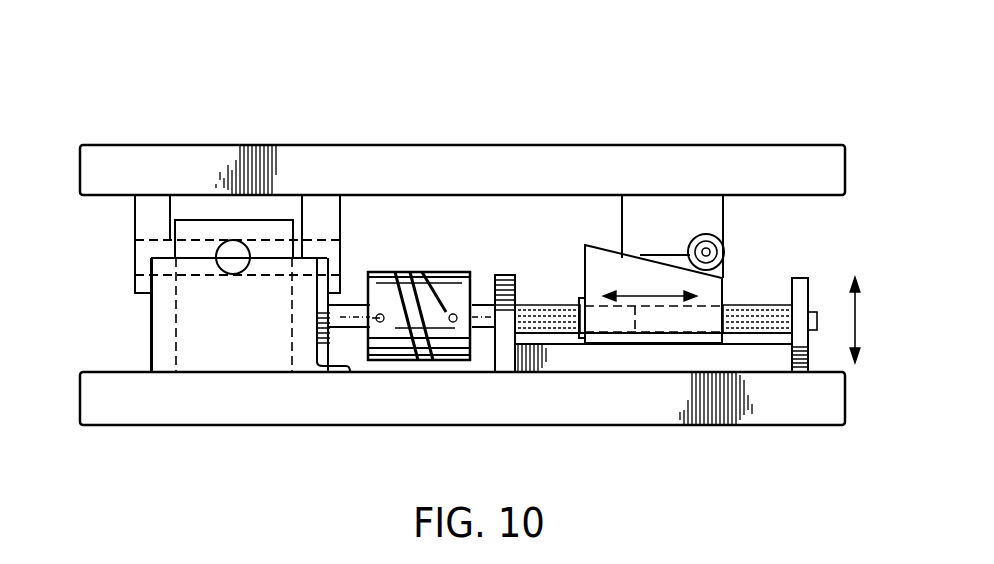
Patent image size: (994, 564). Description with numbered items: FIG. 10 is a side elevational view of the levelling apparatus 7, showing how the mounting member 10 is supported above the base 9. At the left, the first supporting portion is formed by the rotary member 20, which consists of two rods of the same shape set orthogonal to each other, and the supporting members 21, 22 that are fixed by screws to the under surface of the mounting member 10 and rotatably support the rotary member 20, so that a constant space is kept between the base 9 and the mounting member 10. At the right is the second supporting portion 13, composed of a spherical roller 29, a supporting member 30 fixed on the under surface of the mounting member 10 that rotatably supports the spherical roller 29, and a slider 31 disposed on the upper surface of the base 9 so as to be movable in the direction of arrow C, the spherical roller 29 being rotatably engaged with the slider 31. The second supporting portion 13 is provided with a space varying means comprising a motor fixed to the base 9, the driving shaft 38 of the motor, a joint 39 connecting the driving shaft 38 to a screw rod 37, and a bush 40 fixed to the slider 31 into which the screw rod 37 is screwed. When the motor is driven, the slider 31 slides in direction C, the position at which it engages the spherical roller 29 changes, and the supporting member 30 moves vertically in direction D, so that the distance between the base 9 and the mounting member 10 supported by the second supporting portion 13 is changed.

The positioning apparatus 7 is at (596, 132).
The base 9 is at (404, 414).
The mounting member 10 is at (362, 145).
The second supporting portion 13 is at (782, 205).
The rotary member 20 is at (232, 251).
The supporting member 21 is at (152, 216).
The supporting member 22 is at (340, 210).
The spherical roller 29 is at (725, 248).
The supporting member 30 is at (726, 217).
The slider 31 is at (724, 296).
The screw rod 37 is at (526, 304).
The driving shaft 38 is at (151, 332).
The joint 39 is at (446, 272).
The bush 40 is at (580, 298).